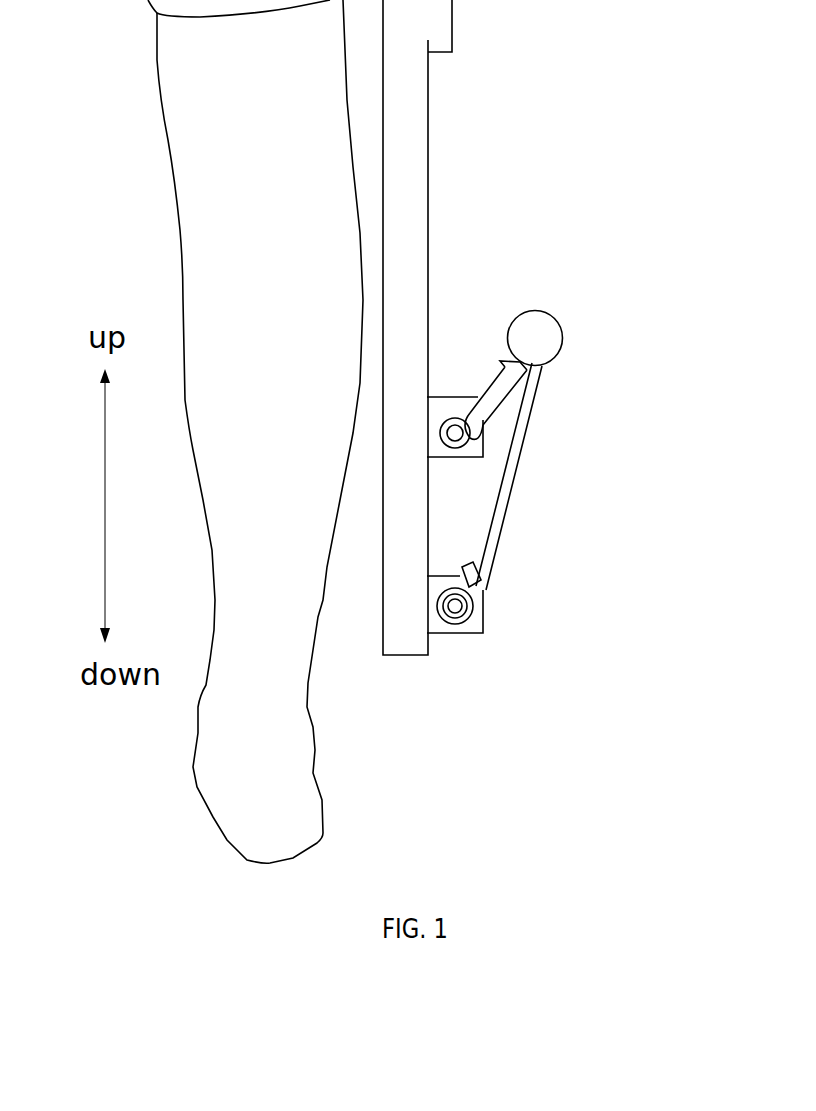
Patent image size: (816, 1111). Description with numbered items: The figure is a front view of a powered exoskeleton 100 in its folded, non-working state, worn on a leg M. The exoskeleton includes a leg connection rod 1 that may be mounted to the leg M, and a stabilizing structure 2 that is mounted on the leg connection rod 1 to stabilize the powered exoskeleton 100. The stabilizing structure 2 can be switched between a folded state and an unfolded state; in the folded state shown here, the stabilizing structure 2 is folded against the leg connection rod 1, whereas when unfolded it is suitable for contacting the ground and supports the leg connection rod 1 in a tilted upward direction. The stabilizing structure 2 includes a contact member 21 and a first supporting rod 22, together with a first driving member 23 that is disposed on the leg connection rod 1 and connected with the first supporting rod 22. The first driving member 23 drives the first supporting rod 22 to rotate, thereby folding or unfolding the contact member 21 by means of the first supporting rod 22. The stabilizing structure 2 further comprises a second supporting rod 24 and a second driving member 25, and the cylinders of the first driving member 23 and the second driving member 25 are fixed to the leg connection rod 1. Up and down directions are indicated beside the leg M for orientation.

The leg M is at (243, 312).
The powered exoskeleton 100 is at (578, 173).
The leg connection rod 1 is at (412, 162).
The stabilizing structure 2 is at (677, 305).
The contact member 21 is at (540, 340).
The first supporting rod 22 is at (507, 397).
The first driving member 23 is at (473, 440).
The second supporting rod 24 is at (508, 510).
The second driving member 25 is at (472, 623).